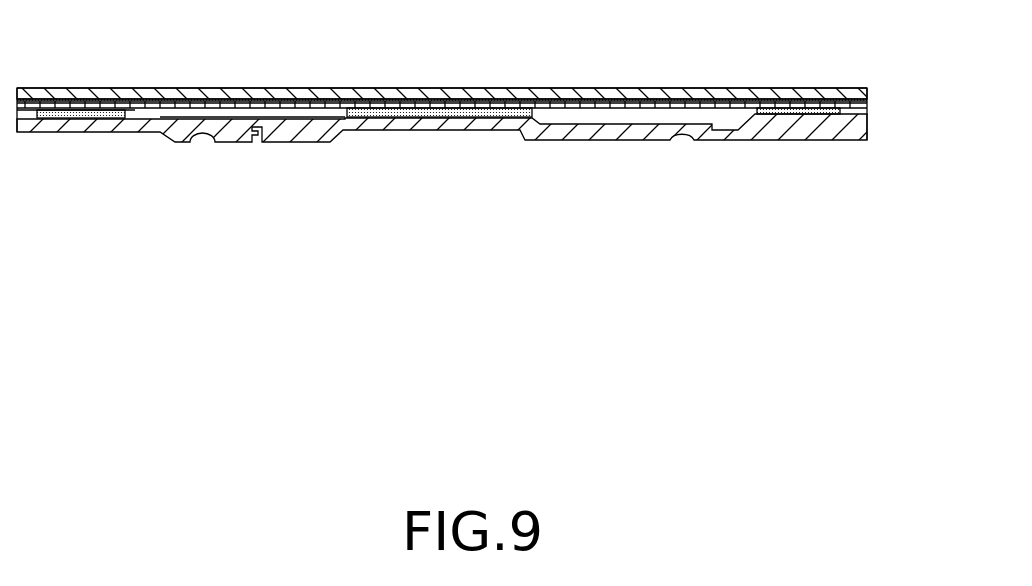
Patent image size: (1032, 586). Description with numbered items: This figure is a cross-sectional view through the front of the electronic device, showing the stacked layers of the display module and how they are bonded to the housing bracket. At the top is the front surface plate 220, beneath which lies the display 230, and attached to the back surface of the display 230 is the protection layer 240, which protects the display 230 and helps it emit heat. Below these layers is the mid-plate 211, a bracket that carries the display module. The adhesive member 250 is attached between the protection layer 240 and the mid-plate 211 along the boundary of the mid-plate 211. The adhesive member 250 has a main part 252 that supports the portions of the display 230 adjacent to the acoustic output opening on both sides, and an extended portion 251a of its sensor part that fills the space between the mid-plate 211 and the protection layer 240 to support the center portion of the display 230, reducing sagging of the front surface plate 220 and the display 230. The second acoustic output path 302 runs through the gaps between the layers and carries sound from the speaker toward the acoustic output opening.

The front surface plate 220 is at (858, 92).
The display 230 is at (867, 101).
The protection layer 240 is at (867, 107).
The adhesive member 250 is at (858, 128).
The main part 252 is at (74, 116).
The extended portion 251a is at (432, 116).
The second acoustic output path 302 is at (278, 121).
The mid-plate 211 is at (820, 128).